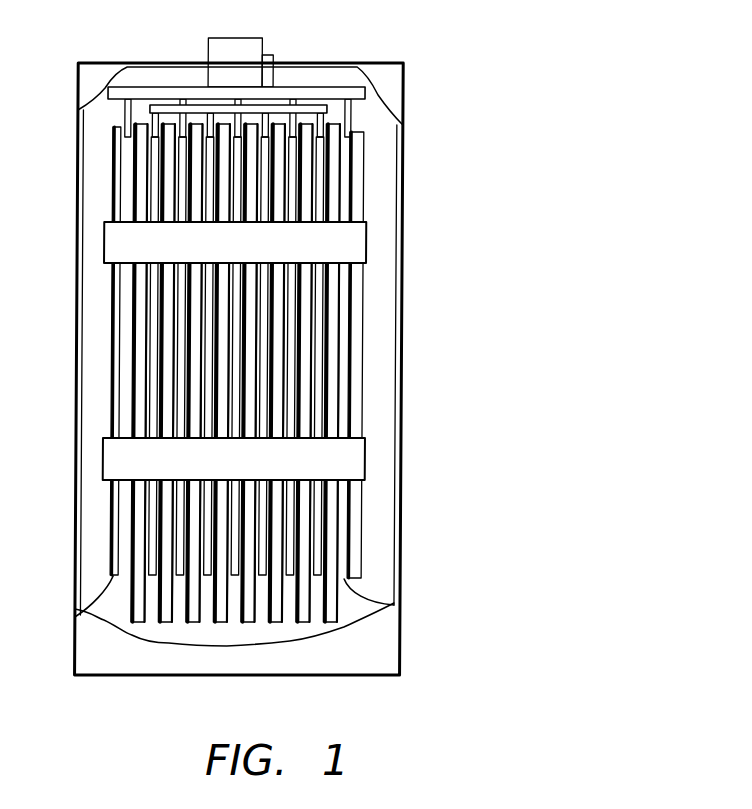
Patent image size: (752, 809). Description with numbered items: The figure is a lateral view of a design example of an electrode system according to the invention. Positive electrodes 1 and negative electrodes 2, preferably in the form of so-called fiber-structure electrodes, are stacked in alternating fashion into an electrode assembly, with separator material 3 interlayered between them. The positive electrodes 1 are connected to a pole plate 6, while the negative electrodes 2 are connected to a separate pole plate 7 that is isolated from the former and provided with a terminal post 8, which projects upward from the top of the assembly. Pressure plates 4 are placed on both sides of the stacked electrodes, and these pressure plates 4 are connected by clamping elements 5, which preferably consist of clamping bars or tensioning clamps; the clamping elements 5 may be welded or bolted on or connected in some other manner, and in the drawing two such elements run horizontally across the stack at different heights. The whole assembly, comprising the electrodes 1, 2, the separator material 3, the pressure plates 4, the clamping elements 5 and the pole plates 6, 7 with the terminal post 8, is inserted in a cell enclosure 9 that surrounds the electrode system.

The positive electrodes 1 is at (78, 617).
The negative electrodes 2 is at (78, 609).
The separator material 3 is at (143, 622).
The pressure plates 4 is at (113, 300).
The clamping elements 5 is at (368, 244).
The pole plate 6 is at (327, 109).
The pole plate 7 is at (365, 93).
The terminal post 8 is at (247, 38).
The cell enclosure 9 is at (403, 579).